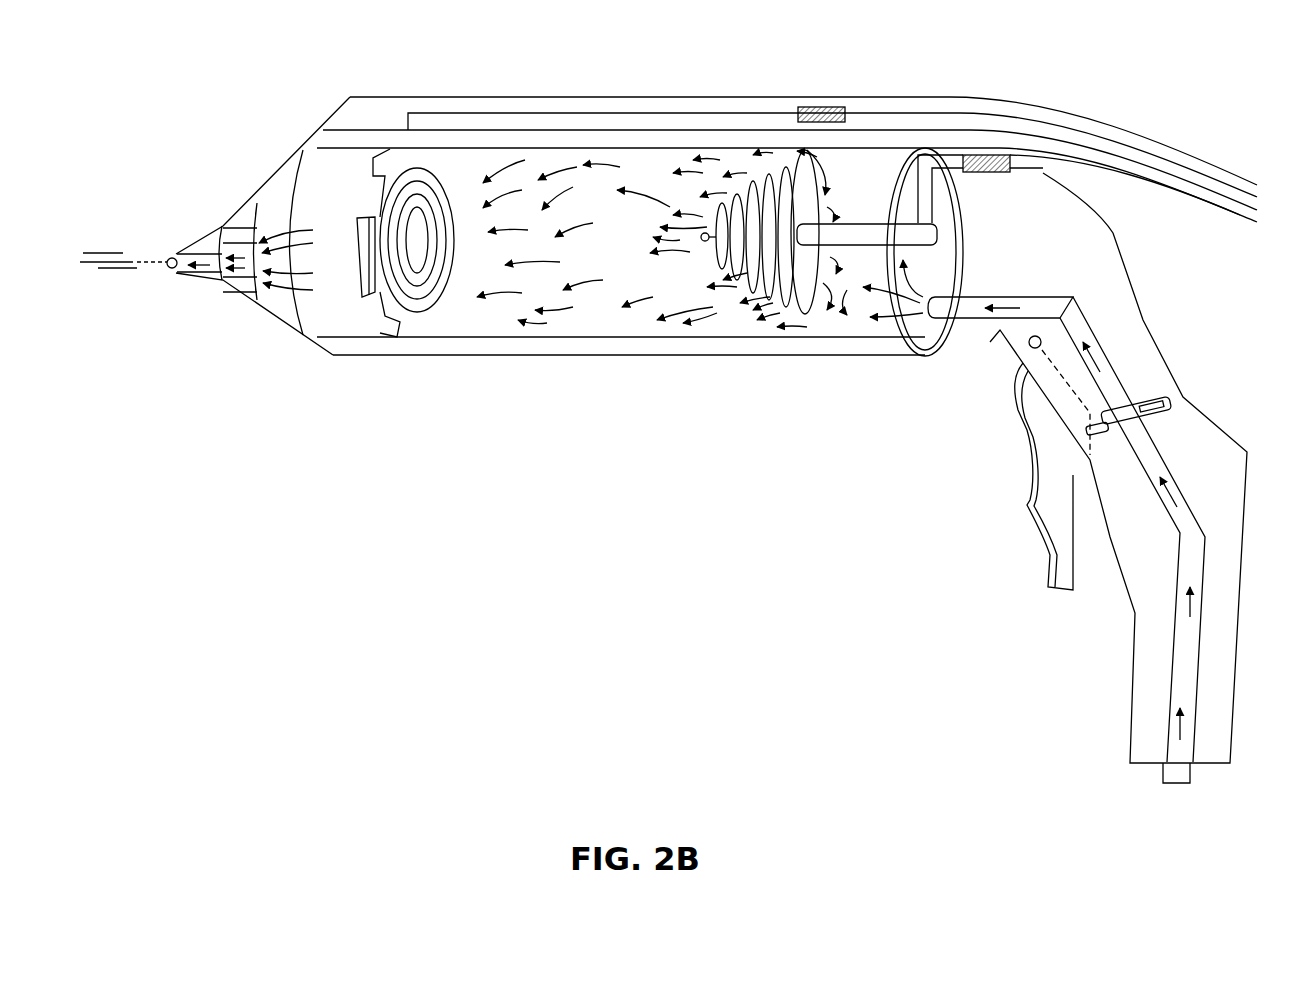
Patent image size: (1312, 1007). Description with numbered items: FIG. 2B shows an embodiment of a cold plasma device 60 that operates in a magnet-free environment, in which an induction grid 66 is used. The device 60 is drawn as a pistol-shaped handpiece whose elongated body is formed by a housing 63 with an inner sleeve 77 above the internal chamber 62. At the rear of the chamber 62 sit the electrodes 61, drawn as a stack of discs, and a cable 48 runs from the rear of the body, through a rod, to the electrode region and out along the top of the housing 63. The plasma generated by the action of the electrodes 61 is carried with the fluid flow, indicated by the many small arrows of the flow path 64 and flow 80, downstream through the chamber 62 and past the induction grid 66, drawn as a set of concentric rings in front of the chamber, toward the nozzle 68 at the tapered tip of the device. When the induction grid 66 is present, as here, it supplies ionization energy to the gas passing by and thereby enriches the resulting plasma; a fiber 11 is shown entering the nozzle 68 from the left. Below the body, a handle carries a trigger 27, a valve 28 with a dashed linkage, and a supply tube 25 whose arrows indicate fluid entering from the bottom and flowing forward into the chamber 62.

The handpiece 60 is at (681, 405).
The housing 63 is at (440, 105).
The inner sleeve 77 is at (523, 137).
The optical pathway 64 is at (657, 237).
The cable 48 is at (845, 222).
The chamber 62 is at (633, 267).
The electrodes 61 is at (813, 273).
The induction grid 66 is at (412, 303).
The nozzle 68 is at (167, 265).
The fiber 11 is at (110, 253).
The air flow 80 is at (477, 370).
The trigger 27 is at (1057, 540).
The valve 28 is at (1150, 430).
The supply tube 25 is at (1183, 697).